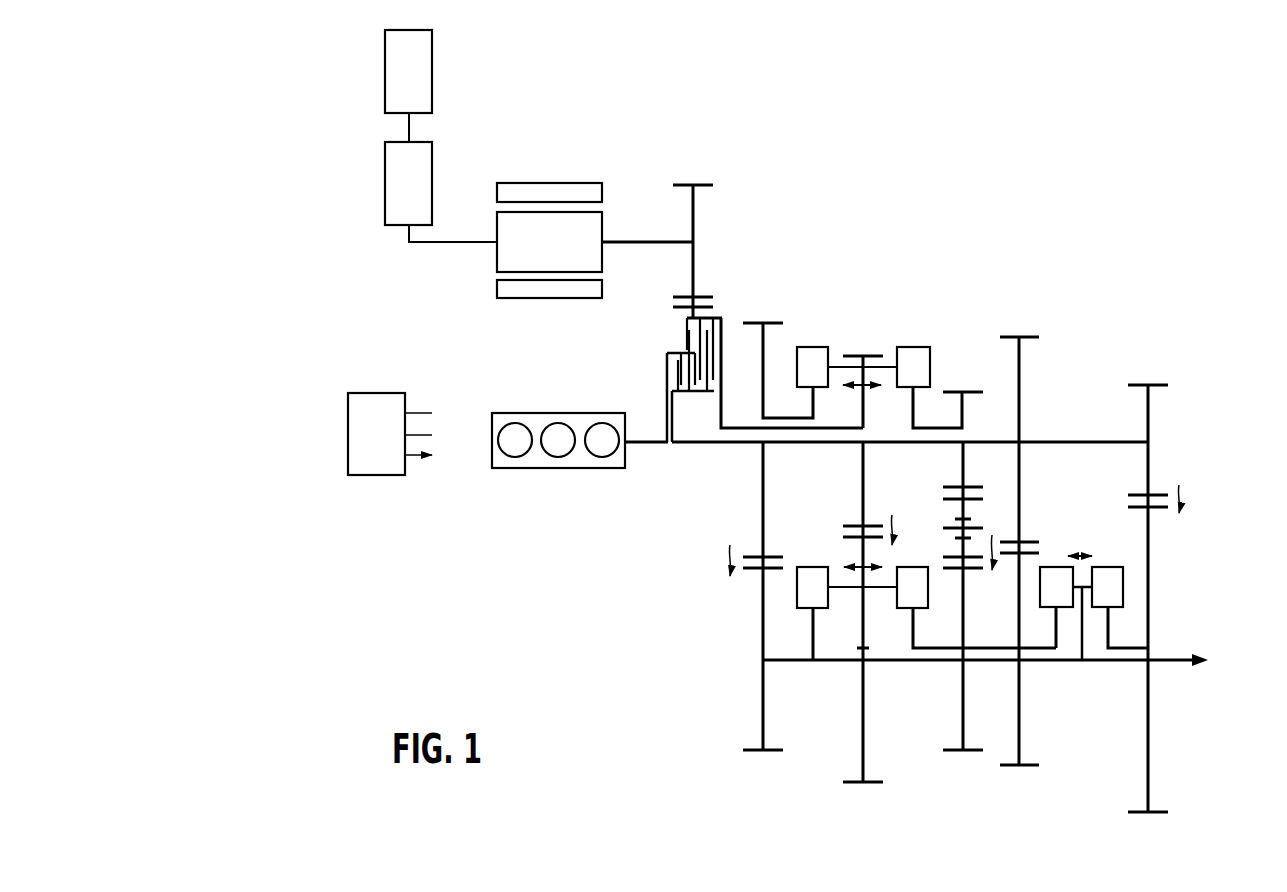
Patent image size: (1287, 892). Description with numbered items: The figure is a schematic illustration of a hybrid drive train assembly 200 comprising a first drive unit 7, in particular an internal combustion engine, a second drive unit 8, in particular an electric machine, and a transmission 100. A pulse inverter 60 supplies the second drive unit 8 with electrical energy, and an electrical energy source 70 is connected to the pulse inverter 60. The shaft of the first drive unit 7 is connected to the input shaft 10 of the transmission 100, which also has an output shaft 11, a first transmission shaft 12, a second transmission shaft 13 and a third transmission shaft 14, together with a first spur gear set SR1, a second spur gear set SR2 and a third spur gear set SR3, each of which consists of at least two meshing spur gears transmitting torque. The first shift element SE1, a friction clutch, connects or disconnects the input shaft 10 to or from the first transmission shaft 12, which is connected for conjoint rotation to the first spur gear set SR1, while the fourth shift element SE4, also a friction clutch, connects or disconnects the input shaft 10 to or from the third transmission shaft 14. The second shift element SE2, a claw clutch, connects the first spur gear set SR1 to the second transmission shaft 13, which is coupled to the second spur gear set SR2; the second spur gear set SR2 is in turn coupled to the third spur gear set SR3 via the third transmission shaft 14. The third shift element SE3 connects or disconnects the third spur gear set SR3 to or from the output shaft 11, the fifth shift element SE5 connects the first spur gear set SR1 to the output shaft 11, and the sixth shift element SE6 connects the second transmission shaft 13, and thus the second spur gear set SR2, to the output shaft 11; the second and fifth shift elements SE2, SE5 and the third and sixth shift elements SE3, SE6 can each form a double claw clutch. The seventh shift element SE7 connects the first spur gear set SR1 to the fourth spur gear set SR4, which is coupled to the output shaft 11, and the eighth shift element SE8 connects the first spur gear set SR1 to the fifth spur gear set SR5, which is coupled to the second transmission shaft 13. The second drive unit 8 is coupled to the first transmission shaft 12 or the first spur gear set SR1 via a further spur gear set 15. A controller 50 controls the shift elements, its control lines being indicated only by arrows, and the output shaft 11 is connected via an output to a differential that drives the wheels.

The hybrid drive train assembly 200 is at (324, 144).
The electrical energy source 70 is at (421, 88).
The pulse inverter 60 is at (421, 200).
The second drive unit 8 is at (557, 257).
The further spur gear set 15 is at (685, 183).
The transmission 100 is at (1079, 230).
The first shift element SE1 is at (742, 373).
The fourth shift element SE4 is at (663, 386).
The seventh shift element SE7 is at (813, 350).
The eighth shift element SE8 is at (913, 350).
The first drive unit 7 is at (536, 420).
The controller 50 is at (388, 447).
The input shaft 10 is at (645, 446).
The first transmission shaft 12 is at (738, 446).
The third transmission shaft 14 is at (1060, 440).
The fifth shift element SE5 is at (813, 577).
The second shift element SE2 is at (905, 577).
The sixth shift element SE6 is at (1050, 577).
The third shift element SE3 is at (1113, 577).
The second transmission shaft 13 is at (983, 648).
The output shaft 11 is at (1178, 657).
The fourth spur gear set SR4 is at (733, 727).
The first spur gear set SR1 is at (843, 722).
The fifth spur gear set SR5 is at (946, 726).
The second spur gear set SR2 is at (1036, 724).
The third spur gear set SR3 is at (1184, 733).